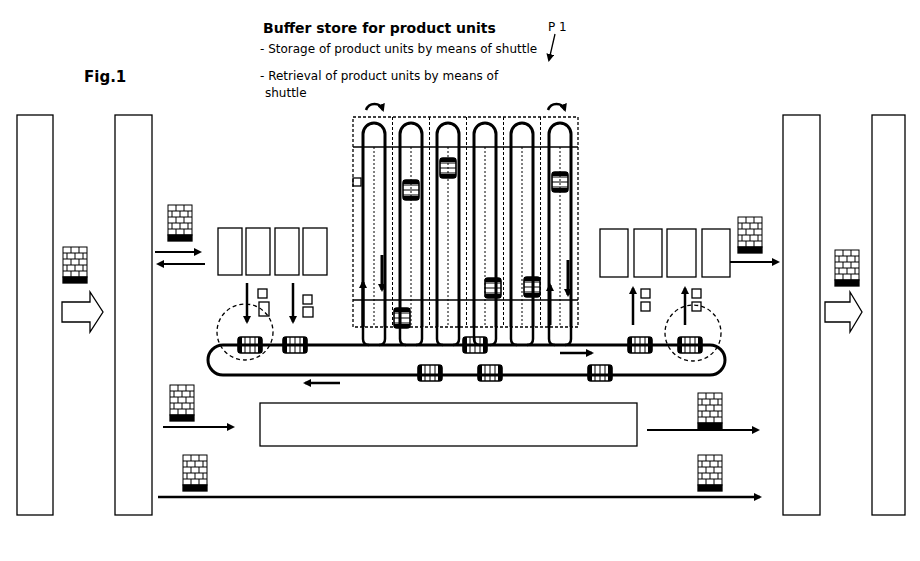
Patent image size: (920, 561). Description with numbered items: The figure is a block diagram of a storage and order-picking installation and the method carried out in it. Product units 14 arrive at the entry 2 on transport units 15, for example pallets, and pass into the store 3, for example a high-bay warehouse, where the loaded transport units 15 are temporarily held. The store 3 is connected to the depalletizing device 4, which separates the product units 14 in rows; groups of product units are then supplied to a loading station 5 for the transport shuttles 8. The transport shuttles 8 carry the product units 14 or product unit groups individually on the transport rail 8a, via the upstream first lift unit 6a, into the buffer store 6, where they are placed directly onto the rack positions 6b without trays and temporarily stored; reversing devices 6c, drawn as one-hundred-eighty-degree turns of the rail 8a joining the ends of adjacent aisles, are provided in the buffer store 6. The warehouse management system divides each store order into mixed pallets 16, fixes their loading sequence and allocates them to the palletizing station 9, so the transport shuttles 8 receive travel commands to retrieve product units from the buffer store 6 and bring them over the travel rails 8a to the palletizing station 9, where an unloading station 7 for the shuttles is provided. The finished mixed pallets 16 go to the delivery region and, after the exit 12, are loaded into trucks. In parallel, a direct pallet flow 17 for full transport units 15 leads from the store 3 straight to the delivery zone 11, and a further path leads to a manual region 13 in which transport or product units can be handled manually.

The entry 2 is at (31, 122).
The store 3 is at (132, 122).
The depalletizing device 4 is at (221, 233).
The loading station 5 is at (231, 335).
The buffer store 6 is at (443, 228).
The first lift unit 6a is at (366, 326).
The rack positions 6b is at (353, 182).
The reversing devices 6c is at (364, 147).
The unloading station 7 is at (714, 335).
The transport shuttles 8 is at (568, 178).
The transport rail 8a is at (575, 192).
The palletizing station 9 is at (607, 241).
The delivery zone 11 is at (802, 130).
The exit 12 is at (885, 127).
The manual region 13 is at (276, 433).
The product units 14 is at (258, 293).
The transport units 15 is at (79, 246).
The mixed pallets 16 is at (750, 216).
The direct pallet flow 17 is at (388, 499).